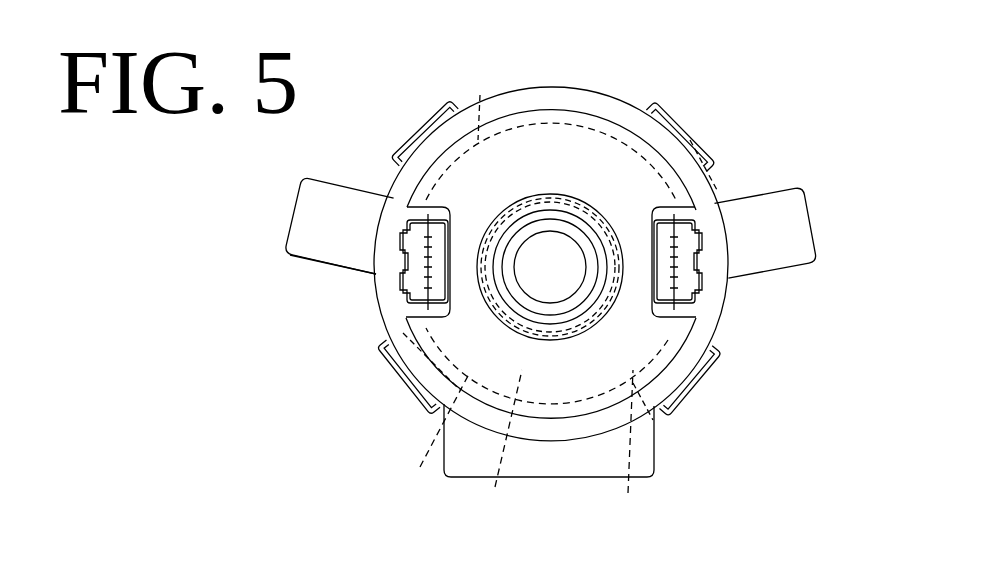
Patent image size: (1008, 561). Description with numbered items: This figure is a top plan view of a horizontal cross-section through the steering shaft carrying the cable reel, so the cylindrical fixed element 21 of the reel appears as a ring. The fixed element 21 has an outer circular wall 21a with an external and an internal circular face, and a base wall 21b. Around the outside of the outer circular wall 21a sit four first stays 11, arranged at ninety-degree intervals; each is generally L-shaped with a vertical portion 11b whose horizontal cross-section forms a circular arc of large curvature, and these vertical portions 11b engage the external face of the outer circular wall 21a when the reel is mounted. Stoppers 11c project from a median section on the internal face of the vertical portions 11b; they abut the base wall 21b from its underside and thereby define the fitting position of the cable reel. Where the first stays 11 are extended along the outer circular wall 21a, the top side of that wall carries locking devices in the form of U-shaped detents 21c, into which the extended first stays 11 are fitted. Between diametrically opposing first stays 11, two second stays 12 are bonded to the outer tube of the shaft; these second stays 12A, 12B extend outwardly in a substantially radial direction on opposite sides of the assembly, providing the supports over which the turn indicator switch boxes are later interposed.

The first stay 11 is at (480, 95).
The vertical portion 11b is at (430, 123).
The stopper 11c is at (395, 322).
The second stay 12 is at (300, 261).
The second stay 12A is at (330, 258).
The second stay 12B is at (770, 274).
The fixed element 21 is at (555, 88).
The outer circular wall 21a is at (623, 102).
The base wall 21b is at (549, 445).
The U-shaped detent 21c is at (670, 108).